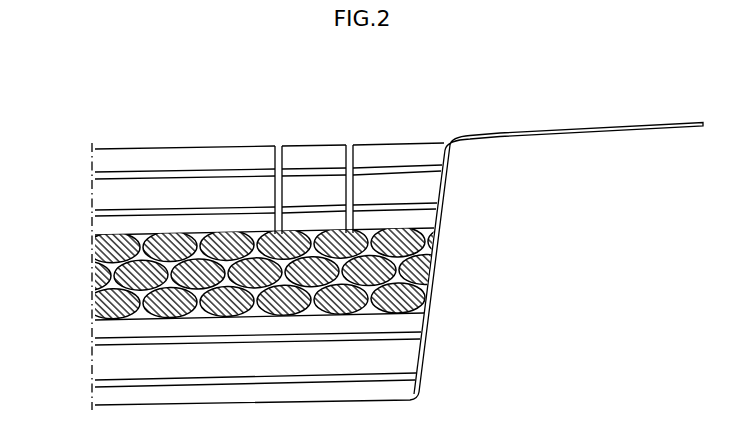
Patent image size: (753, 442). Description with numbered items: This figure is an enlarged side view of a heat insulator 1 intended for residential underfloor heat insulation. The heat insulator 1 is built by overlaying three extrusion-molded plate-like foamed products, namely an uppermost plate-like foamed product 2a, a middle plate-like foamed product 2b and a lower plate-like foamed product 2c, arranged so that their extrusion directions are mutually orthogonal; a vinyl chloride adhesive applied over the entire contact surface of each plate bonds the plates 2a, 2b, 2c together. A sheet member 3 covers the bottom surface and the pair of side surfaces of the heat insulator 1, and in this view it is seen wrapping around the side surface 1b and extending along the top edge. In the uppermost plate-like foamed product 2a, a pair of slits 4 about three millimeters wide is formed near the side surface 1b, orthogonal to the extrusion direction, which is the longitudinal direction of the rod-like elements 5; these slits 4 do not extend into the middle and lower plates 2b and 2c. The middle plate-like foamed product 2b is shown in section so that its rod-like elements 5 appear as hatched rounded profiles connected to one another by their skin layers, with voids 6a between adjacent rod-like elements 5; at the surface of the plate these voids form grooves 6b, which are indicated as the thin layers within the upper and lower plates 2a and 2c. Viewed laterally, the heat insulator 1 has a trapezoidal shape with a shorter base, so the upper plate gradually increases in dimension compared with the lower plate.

The heat insulator 1 is at (176, 100).
The side surface 1b is at (472, 279).
The uppermost plate-like foamed product 2a is at (82, 152).
The middle plate-like foamed product 2b is at (82, 238).
The lower plate-like foamed product 2c is at (82, 325).
The sheet member 3 is at (568, 130).
The slits 4 is at (350, 146).
The rod-like elements 5 is at (426, 238).
The voids 6a is at (425, 297).
The grooves 6b is at (418, 206).